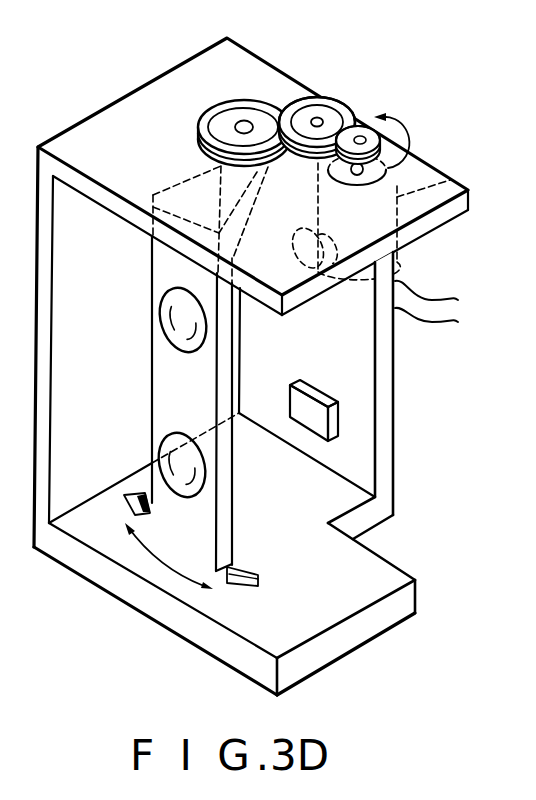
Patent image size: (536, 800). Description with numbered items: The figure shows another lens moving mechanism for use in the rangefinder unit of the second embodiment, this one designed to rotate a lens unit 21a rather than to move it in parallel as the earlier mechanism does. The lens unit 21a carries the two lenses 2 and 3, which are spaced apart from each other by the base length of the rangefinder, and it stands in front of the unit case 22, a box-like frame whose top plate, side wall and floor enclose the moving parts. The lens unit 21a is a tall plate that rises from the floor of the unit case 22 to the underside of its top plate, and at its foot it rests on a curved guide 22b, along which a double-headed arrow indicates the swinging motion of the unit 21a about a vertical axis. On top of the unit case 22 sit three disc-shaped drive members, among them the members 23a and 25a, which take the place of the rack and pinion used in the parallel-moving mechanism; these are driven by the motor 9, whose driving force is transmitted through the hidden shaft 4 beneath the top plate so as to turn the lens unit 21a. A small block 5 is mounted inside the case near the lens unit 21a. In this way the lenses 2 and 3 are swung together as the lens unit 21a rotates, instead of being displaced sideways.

The lens 2 is at (160, 319).
The lens 3 is at (165, 461).
The drive motor 4 is at (321, 276).
The sensor block 5 is at (318, 394).
The motor 9 is at (449, 181).
The lens unit 21a is at (229, 511).
The unit case 22 is at (395, 509).
The curved guide rail 22b is at (259, 580).
The first pulley 23a is at (257, 100).
The second pulley 25a is at (338, 100).